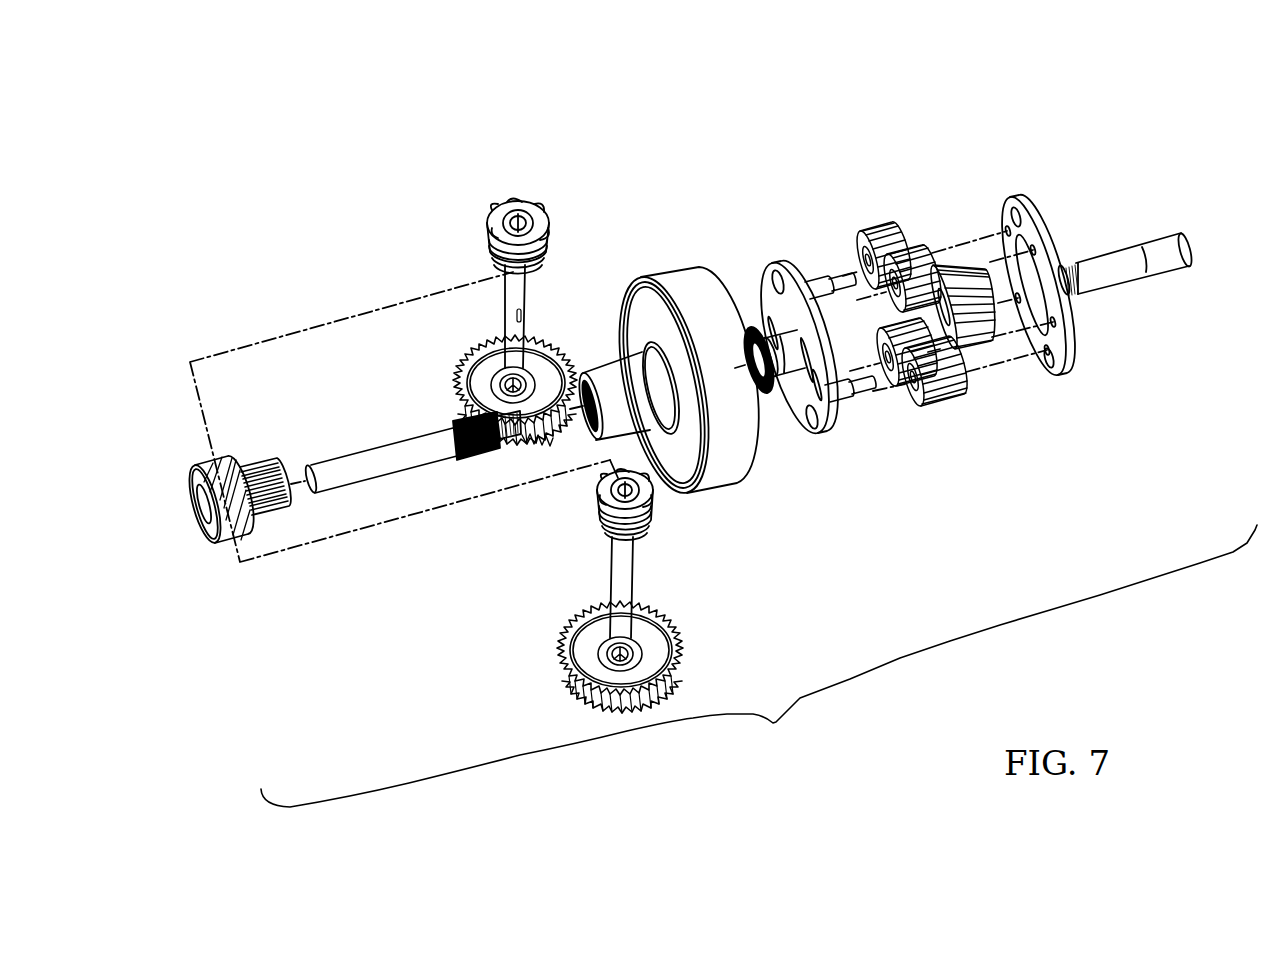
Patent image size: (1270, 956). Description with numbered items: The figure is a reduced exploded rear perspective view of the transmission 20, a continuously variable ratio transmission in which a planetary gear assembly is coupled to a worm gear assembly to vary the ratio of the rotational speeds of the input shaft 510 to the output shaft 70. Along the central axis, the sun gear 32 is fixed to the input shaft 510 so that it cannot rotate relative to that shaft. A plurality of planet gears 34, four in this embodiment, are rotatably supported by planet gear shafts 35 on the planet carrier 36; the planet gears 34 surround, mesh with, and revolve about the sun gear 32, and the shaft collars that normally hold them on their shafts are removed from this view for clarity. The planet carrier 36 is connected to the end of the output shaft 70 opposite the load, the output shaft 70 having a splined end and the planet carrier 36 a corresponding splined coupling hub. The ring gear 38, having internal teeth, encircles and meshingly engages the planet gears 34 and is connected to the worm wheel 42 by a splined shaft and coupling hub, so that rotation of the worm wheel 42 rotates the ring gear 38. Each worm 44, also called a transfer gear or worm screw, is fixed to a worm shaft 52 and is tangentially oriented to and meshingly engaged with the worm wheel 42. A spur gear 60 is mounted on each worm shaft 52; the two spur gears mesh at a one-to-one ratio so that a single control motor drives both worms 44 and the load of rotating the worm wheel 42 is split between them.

The transmission 20 is at (226, 170).
The sun gear 32 is at (978, 345).
The planet gears 34 is at (941, 232).
The planet gear shafts 35 is at (847, 284).
The planet carrier 36 is at (797, 401).
The ring gear 38 is at (667, 277).
The worm wheel 42 is at (227, 540).
The worm 44 is at (547, 216).
The worm shaft 52 is at (521, 297).
The spur gear 60 is at (487, 400).
The output shaft 70 is at (372, 457).
The input shaft 510 is at (1120, 278).